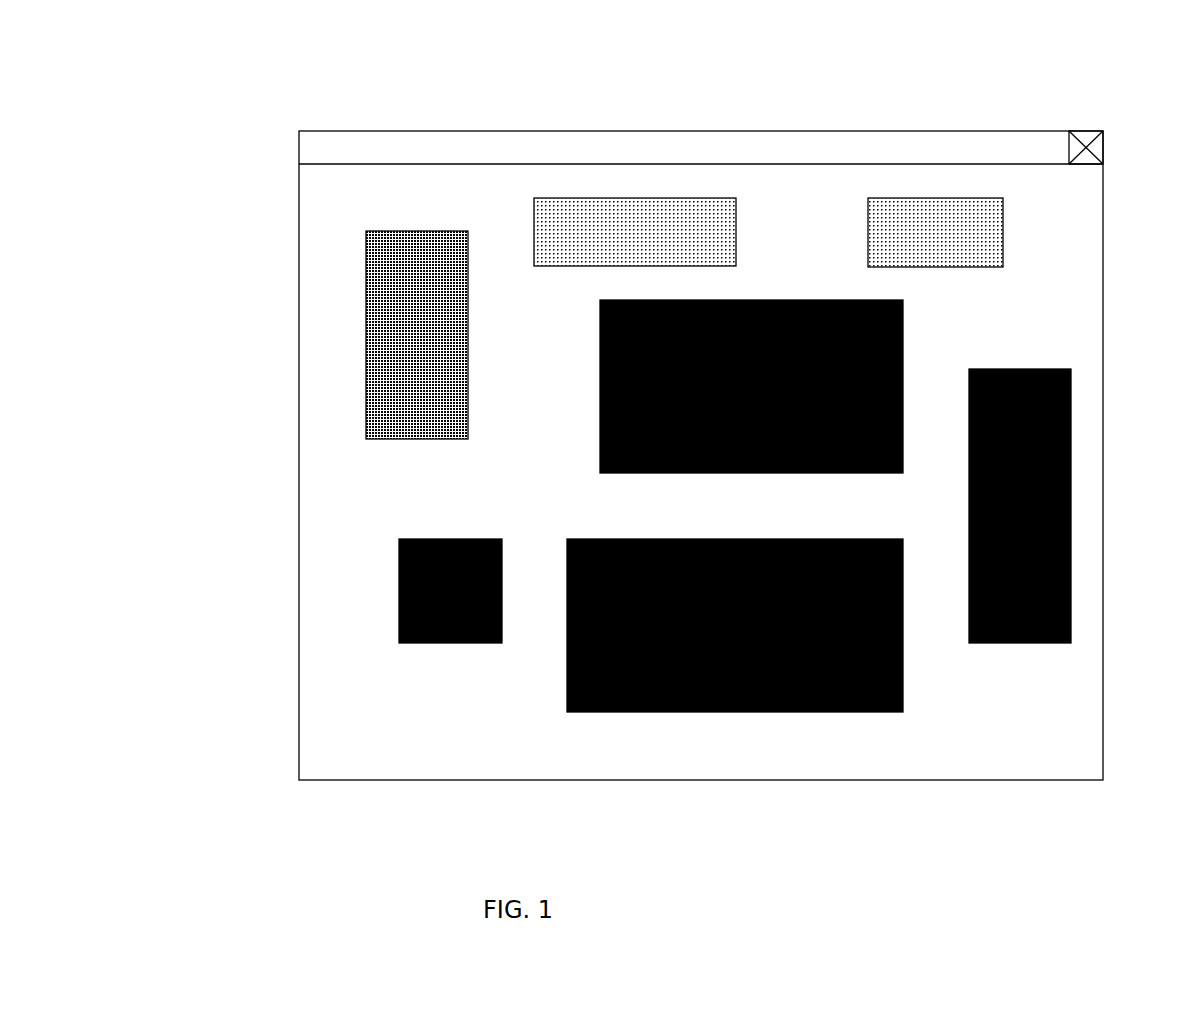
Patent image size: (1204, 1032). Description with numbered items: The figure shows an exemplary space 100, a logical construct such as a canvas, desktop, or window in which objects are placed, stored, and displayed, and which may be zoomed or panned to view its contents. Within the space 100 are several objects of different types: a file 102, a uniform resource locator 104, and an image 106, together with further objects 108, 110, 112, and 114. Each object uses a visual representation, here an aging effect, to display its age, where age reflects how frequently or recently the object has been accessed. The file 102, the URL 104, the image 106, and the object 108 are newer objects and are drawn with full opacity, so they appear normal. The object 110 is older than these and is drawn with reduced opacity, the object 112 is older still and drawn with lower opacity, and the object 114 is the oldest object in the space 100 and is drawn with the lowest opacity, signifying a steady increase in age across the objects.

The space 100 is at (300, 98).
The file 102 is at (903, 335).
The uniform resource locator (URL) 104 is at (753, 712).
The image 106 is at (399, 592).
The object 108 is at (1071, 508).
The object 110 is at (366, 340).
The object 112 is at (635, 197).
The object 114 is at (938, 198).